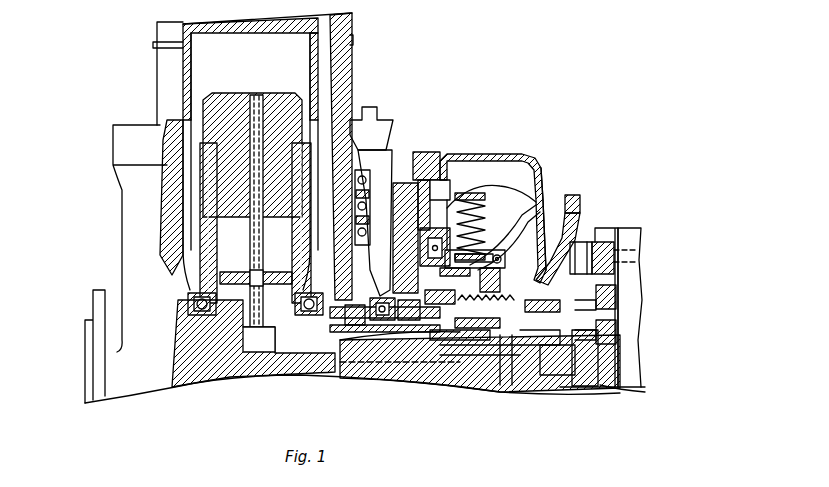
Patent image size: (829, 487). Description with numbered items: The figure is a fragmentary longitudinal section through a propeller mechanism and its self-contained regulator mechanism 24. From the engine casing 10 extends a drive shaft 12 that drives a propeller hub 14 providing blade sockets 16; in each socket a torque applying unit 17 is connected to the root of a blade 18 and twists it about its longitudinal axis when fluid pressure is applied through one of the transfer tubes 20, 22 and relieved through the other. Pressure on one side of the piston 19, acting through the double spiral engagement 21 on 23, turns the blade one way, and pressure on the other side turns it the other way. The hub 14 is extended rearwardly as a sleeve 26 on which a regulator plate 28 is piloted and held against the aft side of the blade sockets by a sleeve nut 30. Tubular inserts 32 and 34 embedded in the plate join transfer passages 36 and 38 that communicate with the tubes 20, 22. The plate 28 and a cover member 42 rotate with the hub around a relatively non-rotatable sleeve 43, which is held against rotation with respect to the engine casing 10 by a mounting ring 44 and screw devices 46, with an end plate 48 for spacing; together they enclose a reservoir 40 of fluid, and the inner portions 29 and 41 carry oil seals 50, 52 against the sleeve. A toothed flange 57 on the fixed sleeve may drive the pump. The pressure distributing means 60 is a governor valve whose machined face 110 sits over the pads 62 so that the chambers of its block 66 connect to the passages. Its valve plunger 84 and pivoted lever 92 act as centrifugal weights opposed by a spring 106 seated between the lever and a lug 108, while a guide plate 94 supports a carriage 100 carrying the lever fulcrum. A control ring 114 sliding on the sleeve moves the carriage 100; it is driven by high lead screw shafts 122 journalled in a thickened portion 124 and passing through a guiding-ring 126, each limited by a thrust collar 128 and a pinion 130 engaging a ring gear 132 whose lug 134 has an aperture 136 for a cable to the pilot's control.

The housing wall 10 is at (636, 272).
The drive shaft 12 is at (606, 395).
The propeller hub 14 is at (108, 337).
The blade sockets 16 is at (135, 218).
The torque applying units 17 is at (290, 95).
The blades 18 is at (160, 76).
The piston 19 is at (242, 100).
The transfer tube 20 is at (296, 343).
The double spiral engagement 21 is at (198, 207).
The transfer tube 22 is at (300, 348).
The double spiral engagement member 23 is at (172, 258).
The regulator mechanism 24 is at (490, 158).
The sleeve 26 is at (440, 352).
The regulator plate 28 is at (399, 183).
The inner portion 29 is at (437, 294).
The sleeve nut 30 is at (504, 360).
The tubular insert 32 is at (408, 335).
The tubular insert 34 is at (380, 330).
The transfer passage 36 is at (388, 270).
The transfer passage 38 is at (353, 363).
The reservoir 40 is at (522, 187).
The inner portion 41 is at (602, 298).
The cover member 42 is at (500, 158).
The sleeve 43 is at (475, 360).
The mounting ring 44 is at (625, 227).
The screw devices 46 is at (582, 245).
The end plate 48 is at (628, 333).
The oil seal 50 is at (453, 362).
The oil seal 52 is at (556, 378).
The toothed flange 57 is at (503, 284).
The pressure distributing means 60 is at (466, 196).
The pads 62 is at (422, 175).
The block 66 is at (442, 185).
The valve plunger 84 is at (432, 230).
The lever 92 is at (497, 252).
The guide plate 94 is at (440, 278).
The carriage 100 is at (540, 255).
The spring 106 is at (486, 228).
The lug 108 is at (485, 196).
The machined face 110 is at (402, 197).
The control ring 114 is at (525, 372).
The high lead screw shafts 122 is at (466, 370).
The thickened portion 124 is at (575, 380).
The guiding-ring 126 is at (605, 392).
The thrust collar 128 is at (532, 370).
The pinion 130 is at (612, 340).
The ring gear 132 is at (608, 306).
The lug 134 is at (581, 197).
The aperture 136 is at (576, 215).